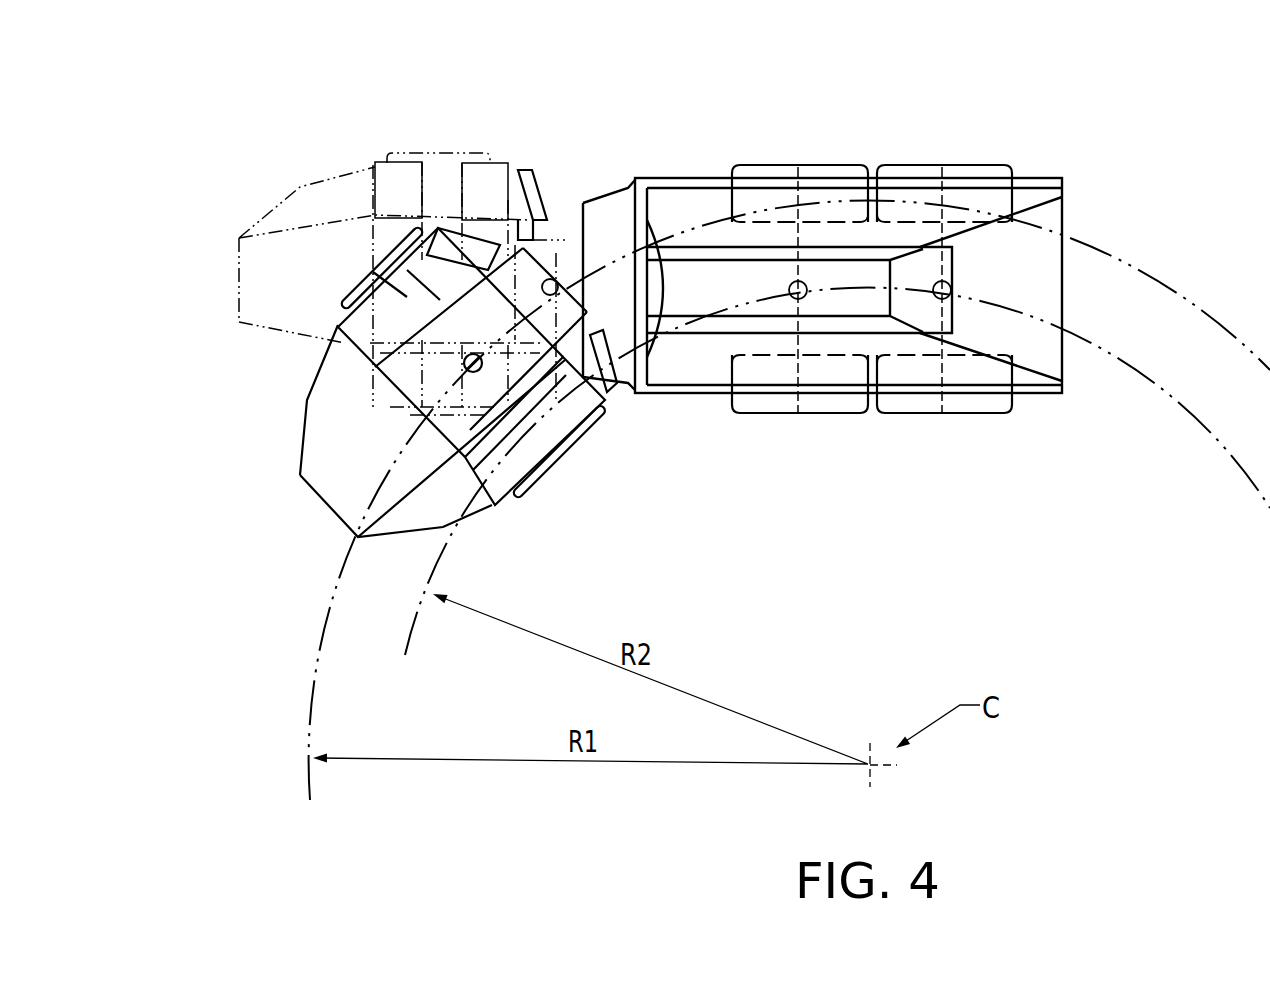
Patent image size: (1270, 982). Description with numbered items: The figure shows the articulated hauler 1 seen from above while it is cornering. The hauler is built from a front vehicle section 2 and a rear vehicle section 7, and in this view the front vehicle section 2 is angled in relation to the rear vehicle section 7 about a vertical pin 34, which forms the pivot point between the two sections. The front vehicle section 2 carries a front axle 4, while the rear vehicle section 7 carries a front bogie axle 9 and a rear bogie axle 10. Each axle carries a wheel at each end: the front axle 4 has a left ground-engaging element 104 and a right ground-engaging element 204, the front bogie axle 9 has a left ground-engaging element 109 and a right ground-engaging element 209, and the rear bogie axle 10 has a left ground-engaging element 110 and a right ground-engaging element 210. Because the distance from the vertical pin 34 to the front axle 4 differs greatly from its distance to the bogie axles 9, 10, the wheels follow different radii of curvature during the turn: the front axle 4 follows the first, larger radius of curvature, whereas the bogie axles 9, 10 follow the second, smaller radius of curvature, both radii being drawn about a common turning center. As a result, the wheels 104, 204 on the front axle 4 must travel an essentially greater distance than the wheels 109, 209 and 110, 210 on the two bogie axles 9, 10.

The articulated hauler 1 is at (968, 550).
The front vehicle section 2 is at (262, 508).
The front axle 4 is at (570, 457).
The rear vehicle section 7 is at (1088, 167).
The front bogie axle 9 is at (798, 164).
The rear bogie axle 10 is at (943, 167).
The vertical pin 34 is at (552, 279).
The left ground-engaging element 104 is at (598, 425).
The left ground-engaging element 109 is at (737, 407).
The left ground-engaging element 110 is at (1010, 408).
The right ground-engaging element 204 is at (445, 268).
The right ground-engaging element 209 is at (732, 167).
The right ground-engaging element 210 is at (1012, 170).